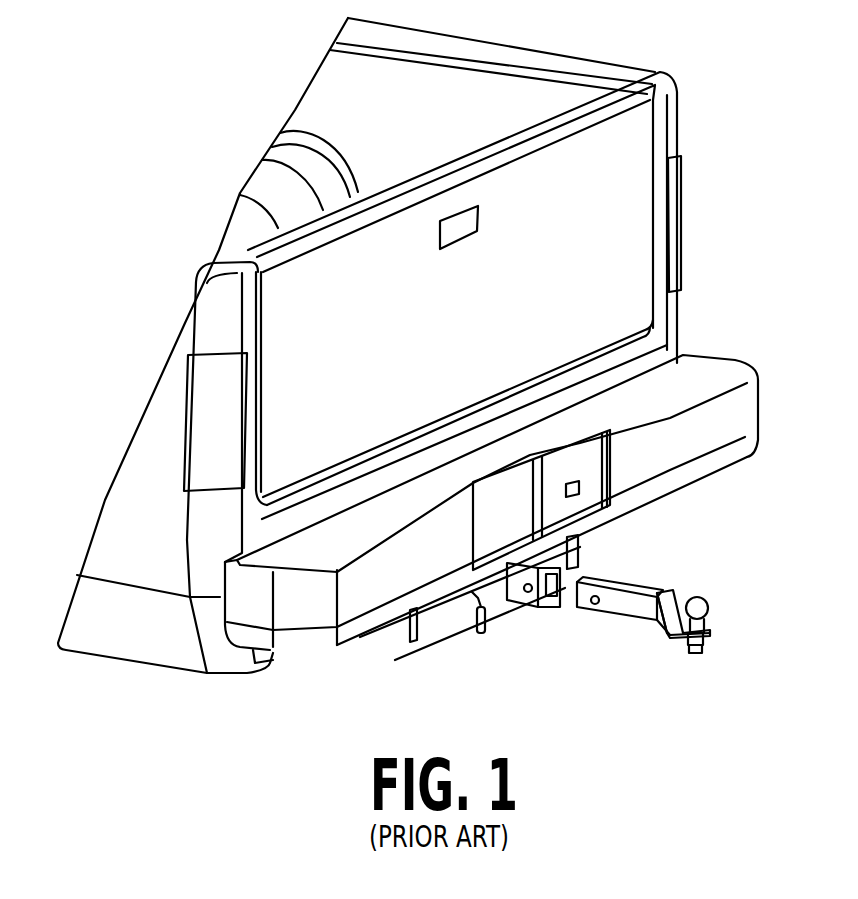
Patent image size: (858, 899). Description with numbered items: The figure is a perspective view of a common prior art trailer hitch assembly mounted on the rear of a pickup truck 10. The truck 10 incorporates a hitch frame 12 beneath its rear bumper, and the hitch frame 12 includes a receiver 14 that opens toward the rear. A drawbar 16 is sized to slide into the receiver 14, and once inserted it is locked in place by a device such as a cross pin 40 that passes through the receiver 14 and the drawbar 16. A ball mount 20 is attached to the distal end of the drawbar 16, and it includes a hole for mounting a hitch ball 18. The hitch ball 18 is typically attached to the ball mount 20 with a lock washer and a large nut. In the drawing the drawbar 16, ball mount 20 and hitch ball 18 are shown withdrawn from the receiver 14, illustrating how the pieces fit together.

The truck 10 is at (727, 170).
The hitch frame 12 is at (580, 552).
The receiver 14 is at (553, 603).
The drawbar 16 is at (627, 617).
The hitch ball 18 is at (703, 600).
The ball mount 20 is at (677, 597).
The cross pin 40 is at (480, 633).